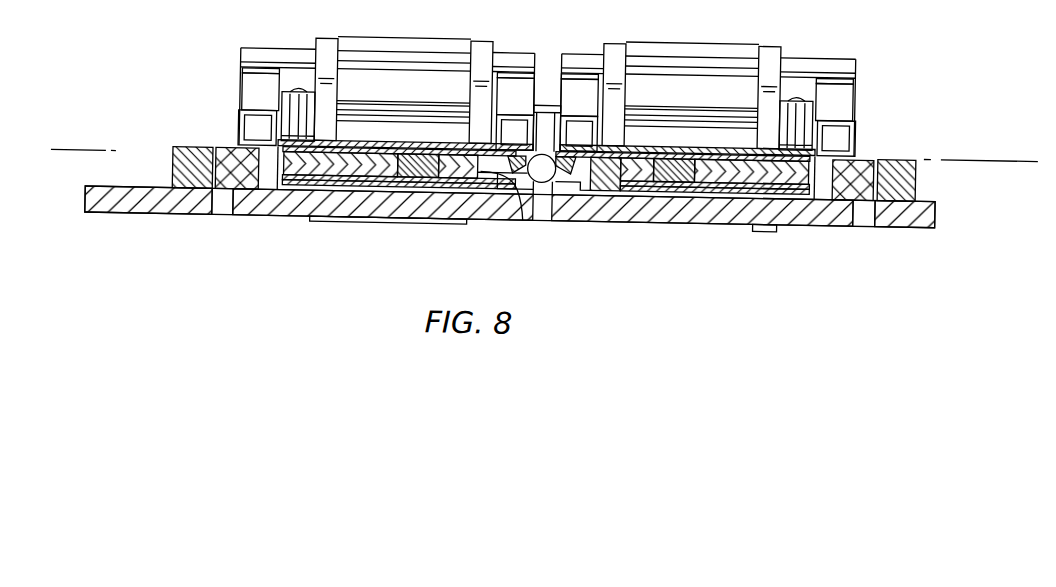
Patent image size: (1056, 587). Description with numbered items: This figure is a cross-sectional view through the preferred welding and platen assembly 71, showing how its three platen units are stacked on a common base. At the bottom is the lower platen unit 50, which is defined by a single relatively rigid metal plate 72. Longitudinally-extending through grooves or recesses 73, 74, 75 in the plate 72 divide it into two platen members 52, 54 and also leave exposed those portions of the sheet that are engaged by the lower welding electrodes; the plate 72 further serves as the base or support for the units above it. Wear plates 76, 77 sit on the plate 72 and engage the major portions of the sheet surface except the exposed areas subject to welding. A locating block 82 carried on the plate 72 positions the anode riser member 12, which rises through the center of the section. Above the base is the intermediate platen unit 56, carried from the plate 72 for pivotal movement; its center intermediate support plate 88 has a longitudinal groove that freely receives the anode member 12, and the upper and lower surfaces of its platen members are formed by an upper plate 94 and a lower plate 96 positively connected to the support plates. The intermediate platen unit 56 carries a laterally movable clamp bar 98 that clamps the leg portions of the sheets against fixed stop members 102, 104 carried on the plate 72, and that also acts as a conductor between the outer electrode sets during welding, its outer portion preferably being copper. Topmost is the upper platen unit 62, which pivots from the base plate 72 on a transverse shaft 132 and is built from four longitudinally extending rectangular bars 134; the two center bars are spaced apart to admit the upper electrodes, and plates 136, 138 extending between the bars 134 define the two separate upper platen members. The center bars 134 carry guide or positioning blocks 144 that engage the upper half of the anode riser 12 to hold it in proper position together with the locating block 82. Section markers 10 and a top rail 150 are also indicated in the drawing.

The section line 10 is at (50, 143).
The anode riser member 12 is at (505, 189).
The lower platen unit 50 is at (537, 191).
The platen member 52 is at (388, 206).
The platen member 54 is at (722, 200).
The intermediate platen unit 56 is at (904, 157).
The upper platen unit 62 is at (862, 127).
The welding and platen assembly 71 is at (889, 26).
The metal plate 72 is at (135, 188).
The recess 73 is at (865, 206).
The recess 74 is at (542, 209).
The recess 75 is at (223, 210).
The wear plate 76 is at (787, 185).
The wear plate 77 is at (332, 208).
The locating block 82 is at (580, 169).
The intermediate support plate 88 is at (500, 187).
The upper plate 94 is at (453, 148).
The lower plate 96 is at (300, 179).
The clamp bar 98 is at (221, 139).
The fixed stop member 102 is at (185, 158).
The fixed stop member 104 is at (912, 165).
The shaft 132 is at (738, 105).
The rectangular bar 134 is at (238, 106).
The plate 136 is at (767, 148).
The plate 138 is at (400, 140).
The guide block 144 is at (560, 142).
The top rail 150 is at (287, 52).